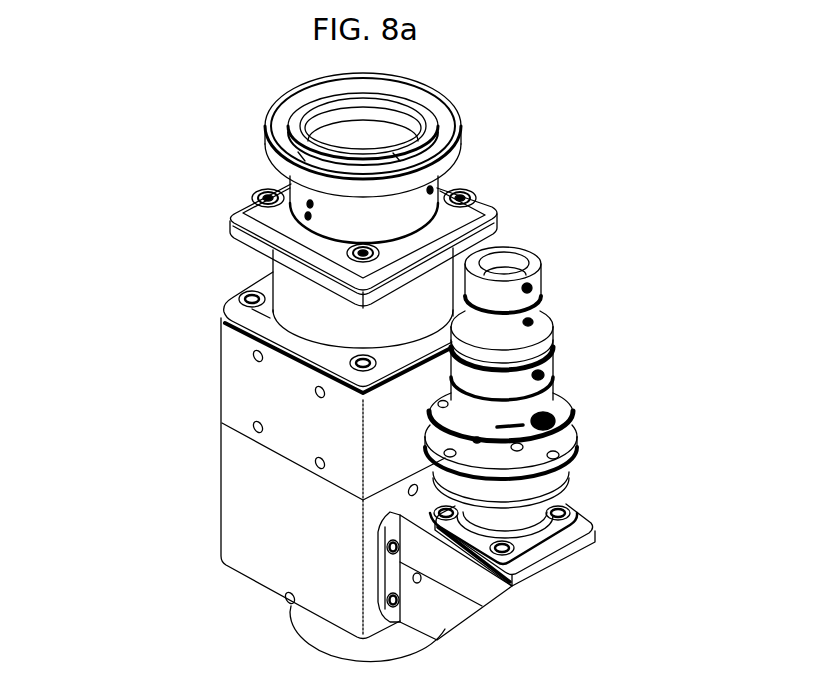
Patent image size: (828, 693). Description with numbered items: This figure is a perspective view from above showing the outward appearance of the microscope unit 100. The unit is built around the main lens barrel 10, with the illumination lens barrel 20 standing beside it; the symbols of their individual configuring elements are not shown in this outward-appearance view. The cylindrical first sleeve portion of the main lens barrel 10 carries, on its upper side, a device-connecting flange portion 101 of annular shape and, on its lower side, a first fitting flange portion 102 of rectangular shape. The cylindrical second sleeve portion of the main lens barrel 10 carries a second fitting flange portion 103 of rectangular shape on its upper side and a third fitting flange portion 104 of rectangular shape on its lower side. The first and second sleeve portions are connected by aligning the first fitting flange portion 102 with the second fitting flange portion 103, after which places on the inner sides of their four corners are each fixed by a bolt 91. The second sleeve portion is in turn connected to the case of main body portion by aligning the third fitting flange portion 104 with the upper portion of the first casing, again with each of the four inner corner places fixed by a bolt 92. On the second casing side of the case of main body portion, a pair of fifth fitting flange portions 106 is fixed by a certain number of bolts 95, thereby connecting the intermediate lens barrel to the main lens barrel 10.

The main lens barrel 10 is at (143, 222).
The illumination lens barrel 20 is at (603, 357).
The bolt 91 is at (258, 192).
The bolt 92 is at (246, 294).
The bolt 95 is at (400, 548).
The microscope unit 100 is at (577, 128).
The device-connecting flange portion 101 is at (447, 114).
The first fitting flange portion 102 is at (450, 185).
The second fitting flange portion 103 is at (240, 230).
The third fitting flange portion 104 is at (224, 319).
The fifth fitting flange portion 106 is at (392, 580).